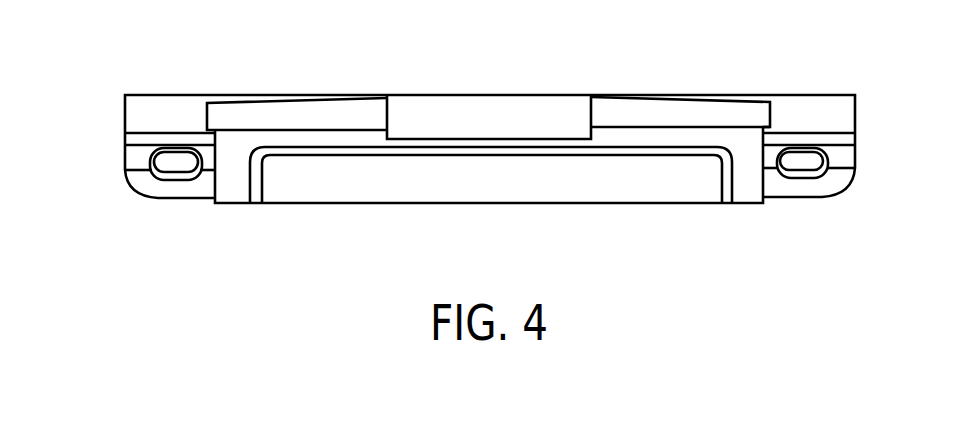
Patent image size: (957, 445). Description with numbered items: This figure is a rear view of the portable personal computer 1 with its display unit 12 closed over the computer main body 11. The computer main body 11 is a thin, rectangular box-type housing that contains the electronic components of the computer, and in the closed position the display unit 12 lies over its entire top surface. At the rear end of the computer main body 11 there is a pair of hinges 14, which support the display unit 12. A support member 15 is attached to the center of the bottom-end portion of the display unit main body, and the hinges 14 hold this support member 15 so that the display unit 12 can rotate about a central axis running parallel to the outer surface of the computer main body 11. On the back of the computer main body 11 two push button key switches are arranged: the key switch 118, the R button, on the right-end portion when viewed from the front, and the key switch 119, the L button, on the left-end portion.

The portable personal computer 1 is at (885, 73).
The computer main body 11 is at (142, 160).
The display unit 12 is at (142, 115).
The hinges 14 is at (300, 108).
The support member 15 is at (488, 108).
The key switch 118 is at (177, 160).
The key switch 119 is at (802, 158).